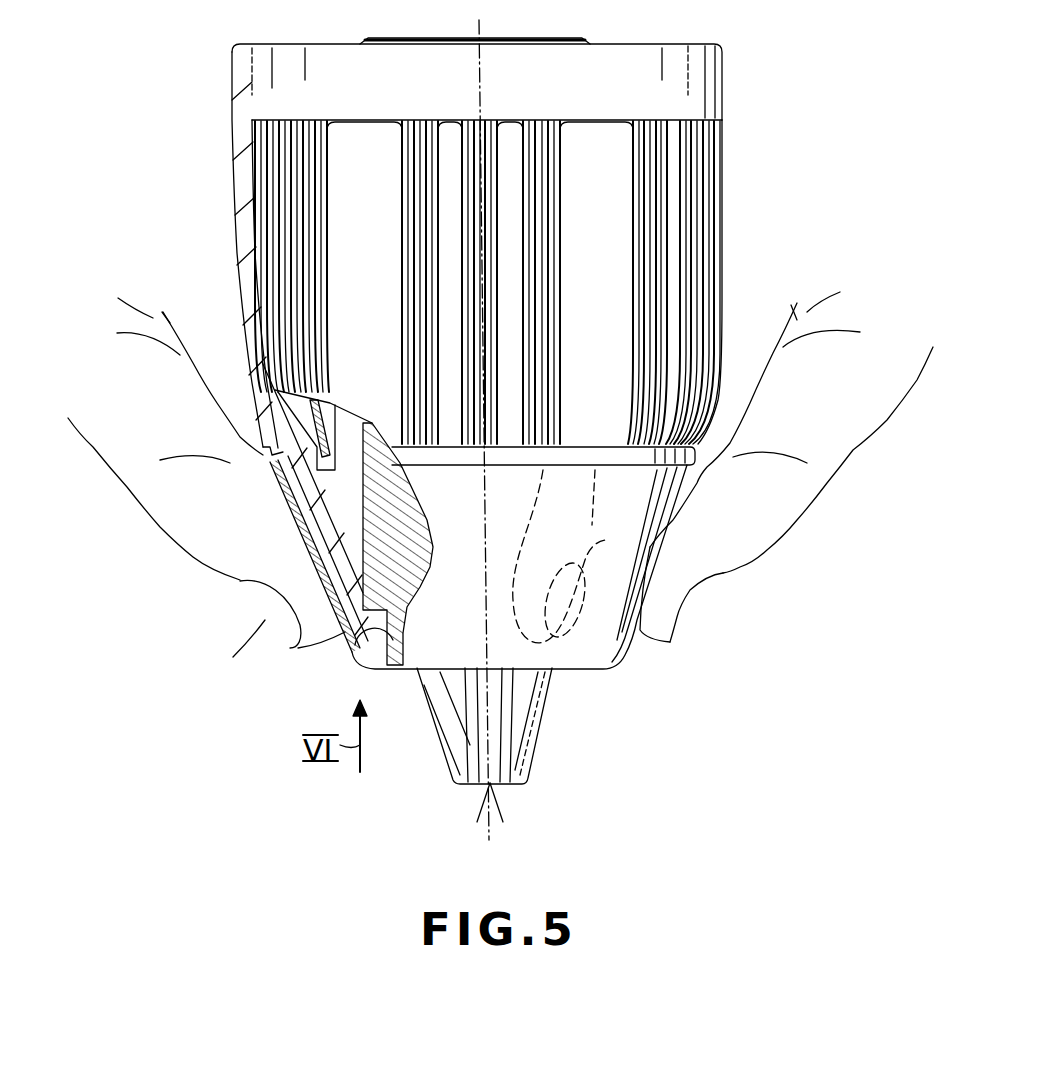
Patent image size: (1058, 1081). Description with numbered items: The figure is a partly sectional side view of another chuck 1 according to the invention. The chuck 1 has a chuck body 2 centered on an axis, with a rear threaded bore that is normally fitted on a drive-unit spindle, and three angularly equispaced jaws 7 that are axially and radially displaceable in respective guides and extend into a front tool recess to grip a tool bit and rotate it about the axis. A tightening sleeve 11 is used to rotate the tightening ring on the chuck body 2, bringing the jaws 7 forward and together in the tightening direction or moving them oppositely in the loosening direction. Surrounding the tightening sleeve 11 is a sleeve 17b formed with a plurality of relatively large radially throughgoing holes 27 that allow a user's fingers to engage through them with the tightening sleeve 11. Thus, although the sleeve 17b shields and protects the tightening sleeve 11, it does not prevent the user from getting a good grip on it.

The chuck 1 is at (210, 196).
The tightening sleeve 11 is at (613, 221).
The chuck body 2 is at (348, 658).
The radially throughgoing holes 27 is at (648, 648).
The sleeve 17b is at (450, 652).
The jaws 7 is at (525, 700).